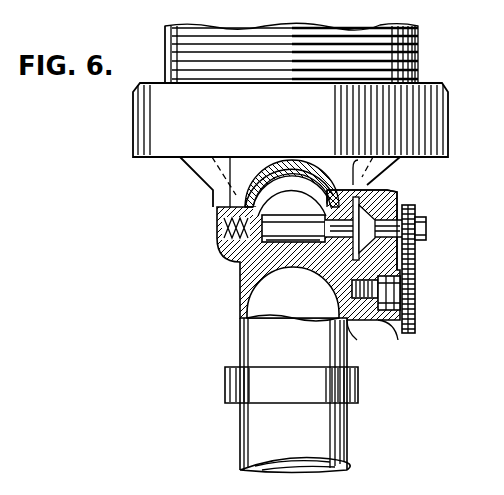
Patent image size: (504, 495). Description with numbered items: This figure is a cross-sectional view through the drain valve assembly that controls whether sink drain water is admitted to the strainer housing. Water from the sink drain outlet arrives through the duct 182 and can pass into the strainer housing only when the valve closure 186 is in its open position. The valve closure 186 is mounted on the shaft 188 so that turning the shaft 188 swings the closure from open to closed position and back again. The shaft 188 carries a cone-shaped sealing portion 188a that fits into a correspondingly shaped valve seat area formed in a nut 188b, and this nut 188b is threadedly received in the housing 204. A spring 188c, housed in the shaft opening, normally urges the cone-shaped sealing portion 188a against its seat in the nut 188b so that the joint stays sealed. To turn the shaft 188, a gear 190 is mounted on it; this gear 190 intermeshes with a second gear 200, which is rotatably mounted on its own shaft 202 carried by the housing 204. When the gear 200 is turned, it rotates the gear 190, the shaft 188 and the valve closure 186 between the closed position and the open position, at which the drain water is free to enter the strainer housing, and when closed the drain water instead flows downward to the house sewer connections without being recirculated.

The duct 182 is at (284, 174).
The valve closure 186 is at (280, 258).
The shaft 188 is at (324, 228).
The cone-shaped sealing portion 188a is at (392, 196).
The nut 188b is at (416, 254).
The spring 188c is at (218, 228).
The gear 190 is at (412, 212).
The gear 200 is at (412, 305).
The shaft 202 is at (366, 319).
The housing 204 is at (378, 320).